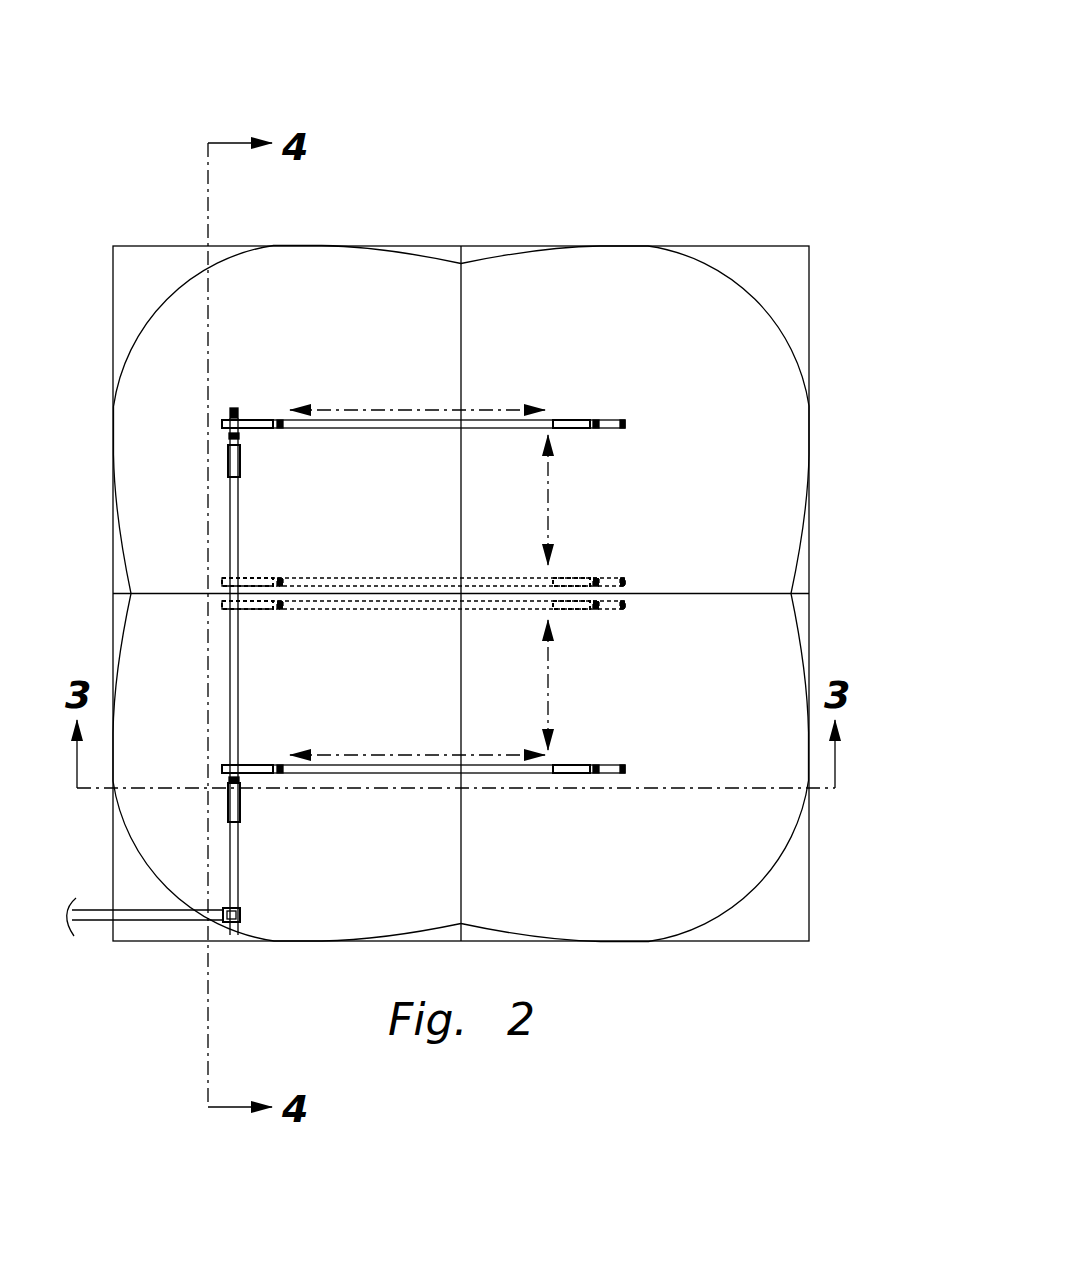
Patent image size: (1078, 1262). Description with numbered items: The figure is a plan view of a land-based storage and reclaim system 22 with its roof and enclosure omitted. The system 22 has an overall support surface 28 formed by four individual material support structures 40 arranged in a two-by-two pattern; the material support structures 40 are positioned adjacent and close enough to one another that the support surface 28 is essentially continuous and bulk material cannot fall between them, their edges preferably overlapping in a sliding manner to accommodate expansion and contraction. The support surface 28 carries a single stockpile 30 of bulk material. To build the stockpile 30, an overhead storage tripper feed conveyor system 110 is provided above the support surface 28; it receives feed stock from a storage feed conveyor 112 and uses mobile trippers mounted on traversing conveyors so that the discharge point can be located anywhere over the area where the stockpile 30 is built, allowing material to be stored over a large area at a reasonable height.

The storage and reclaim system 22 is at (766, 172).
The overall support surface 28 is at (781, 278).
The stockpile 30 is at (163, 292).
The material support structure 40 is at (797, 312).
The overhead storage tripper feed conveyor system 110 is at (388, 352).
The storage feed conveyor 112 is at (152, 913).